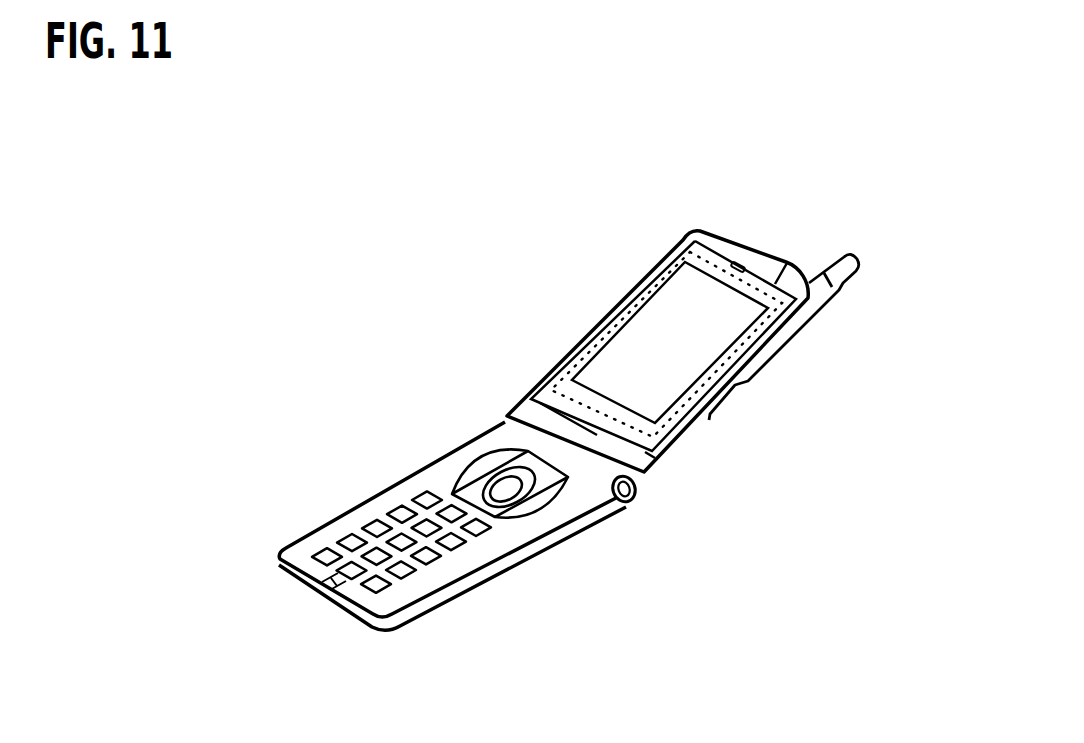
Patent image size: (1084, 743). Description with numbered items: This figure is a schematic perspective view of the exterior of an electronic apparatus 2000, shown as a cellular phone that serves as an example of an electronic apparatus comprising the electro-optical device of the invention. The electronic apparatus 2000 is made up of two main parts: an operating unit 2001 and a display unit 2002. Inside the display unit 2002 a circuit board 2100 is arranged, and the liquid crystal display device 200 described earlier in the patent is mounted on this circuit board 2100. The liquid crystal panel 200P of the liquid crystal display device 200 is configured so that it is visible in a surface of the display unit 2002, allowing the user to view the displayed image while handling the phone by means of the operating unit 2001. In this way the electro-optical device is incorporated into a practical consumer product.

The electronic apparatus 2000 is at (283, 252).
The operating unit 2001 is at (363, 507).
The display unit 2002 is at (736, 385).
The liquid crystal display device 200 is at (704, 234).
The liquid crystal panel 200P is at (640, 350).
The circuit board 2100 is at (783, 265).